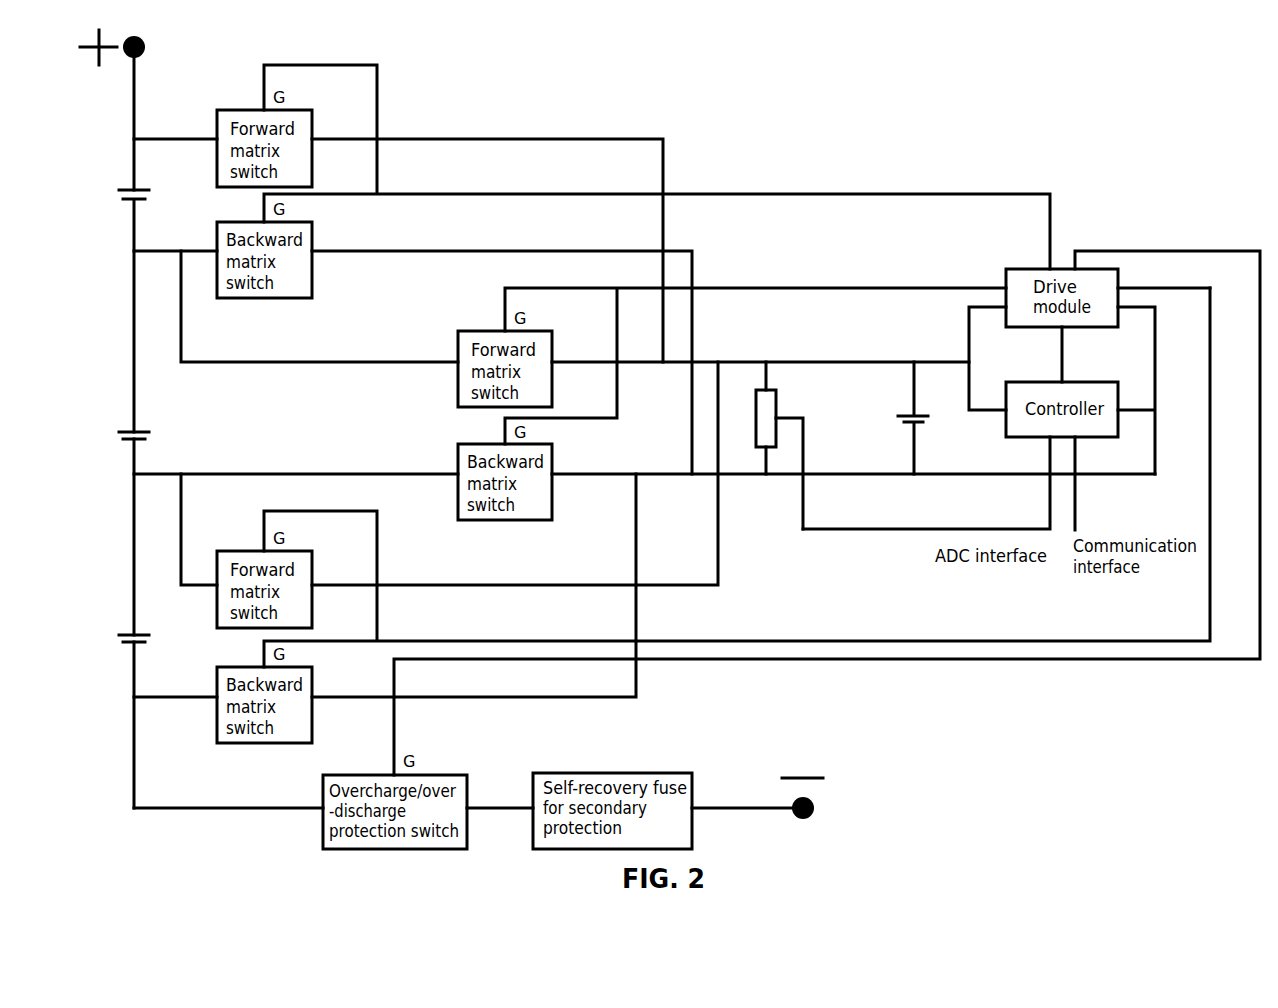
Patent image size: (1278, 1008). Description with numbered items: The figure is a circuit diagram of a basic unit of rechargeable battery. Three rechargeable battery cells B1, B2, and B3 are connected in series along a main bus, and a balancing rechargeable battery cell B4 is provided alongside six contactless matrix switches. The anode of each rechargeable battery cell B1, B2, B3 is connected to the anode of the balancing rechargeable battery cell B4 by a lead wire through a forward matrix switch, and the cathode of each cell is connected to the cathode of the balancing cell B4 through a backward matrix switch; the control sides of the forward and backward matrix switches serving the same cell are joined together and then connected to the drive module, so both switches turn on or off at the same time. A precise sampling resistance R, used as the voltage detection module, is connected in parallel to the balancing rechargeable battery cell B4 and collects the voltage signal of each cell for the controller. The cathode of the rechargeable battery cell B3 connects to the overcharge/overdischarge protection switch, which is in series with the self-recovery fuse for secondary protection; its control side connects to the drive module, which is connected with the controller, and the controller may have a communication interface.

The rechargeable battery cell B1 is at (115, 194).
The rechargeable battery cell B2 is at (115, 435).
The rechargeable battery cell B3 is at (115, 640).
The balancing rechargeable battery cell B4 is at (895, 418).
The precise sampling resistance R is at (779, 445).